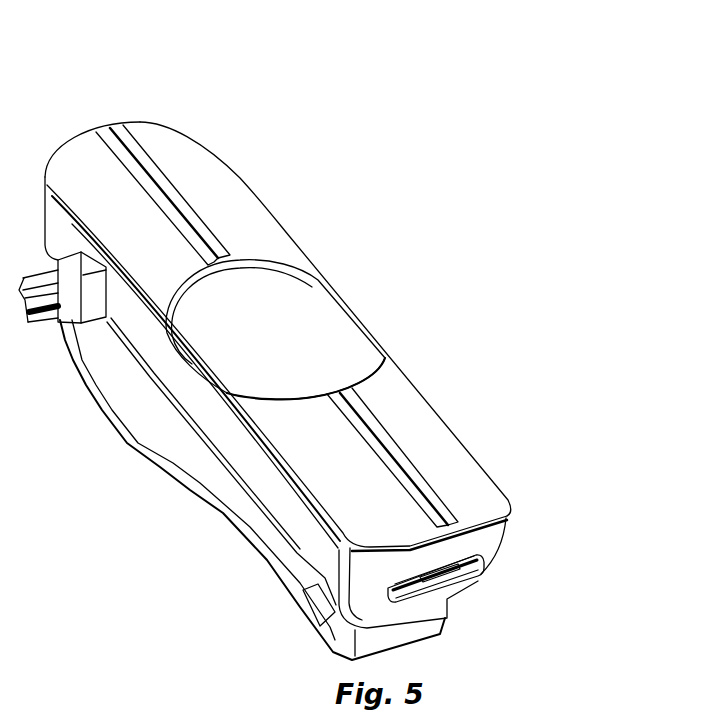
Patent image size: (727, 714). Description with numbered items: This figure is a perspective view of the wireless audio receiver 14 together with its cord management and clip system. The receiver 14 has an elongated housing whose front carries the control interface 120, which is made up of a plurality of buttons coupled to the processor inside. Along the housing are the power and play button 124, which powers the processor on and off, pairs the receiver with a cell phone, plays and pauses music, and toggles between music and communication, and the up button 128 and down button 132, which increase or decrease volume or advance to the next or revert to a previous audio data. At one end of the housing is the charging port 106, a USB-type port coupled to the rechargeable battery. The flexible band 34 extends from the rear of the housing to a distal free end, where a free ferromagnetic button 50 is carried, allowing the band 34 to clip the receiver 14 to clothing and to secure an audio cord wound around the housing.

The wireless audio receiver 14 is at (265, 380).
The control interface 120 is at (193, 148).
The up button 128 is at (233, 185).
The down button 132 is at (433, 430).
The power and play button 124 is at (340, 323).
The flexible band 34 is at (135, 433).
The free ferromagnetic button 50 is at (320, 626).
The charging port 106 is at (435, 573).